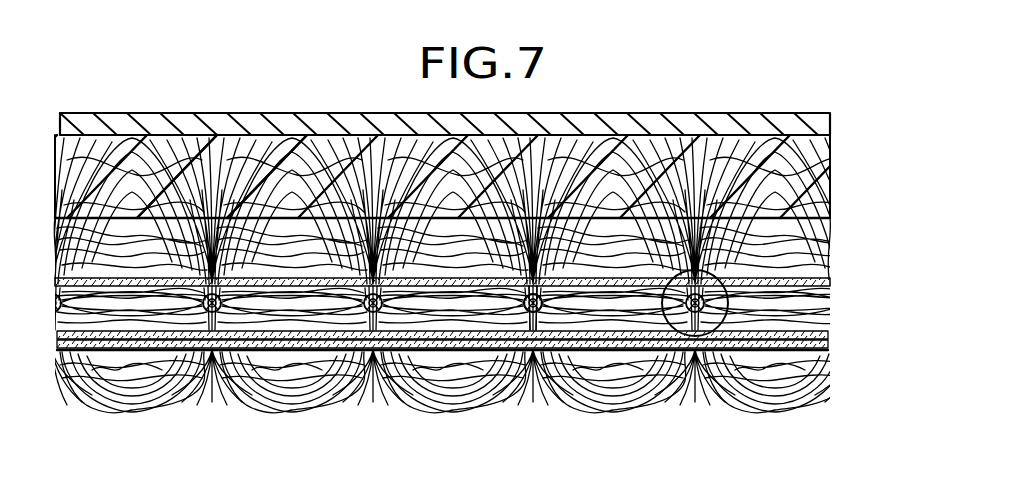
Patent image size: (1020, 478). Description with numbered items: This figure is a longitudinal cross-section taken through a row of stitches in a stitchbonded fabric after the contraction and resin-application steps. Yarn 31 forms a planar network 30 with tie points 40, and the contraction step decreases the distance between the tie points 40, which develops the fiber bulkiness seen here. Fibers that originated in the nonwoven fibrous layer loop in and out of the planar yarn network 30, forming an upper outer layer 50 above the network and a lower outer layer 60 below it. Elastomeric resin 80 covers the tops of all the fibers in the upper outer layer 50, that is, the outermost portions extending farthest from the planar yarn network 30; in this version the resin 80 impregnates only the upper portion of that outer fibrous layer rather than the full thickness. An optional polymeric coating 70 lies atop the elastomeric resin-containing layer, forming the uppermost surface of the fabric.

The polymeric coating 70 is at (640, 125).
The elastomeric resin 80 is at (197, 190).
The upper outer layer 50 is at (843, 133).
The tie points 40 is at (712, 278).
The planar network 30 is at (843, 279).
The yarn 31 is at (530, 343).
The lower outer layer 60 is at (843, 347).